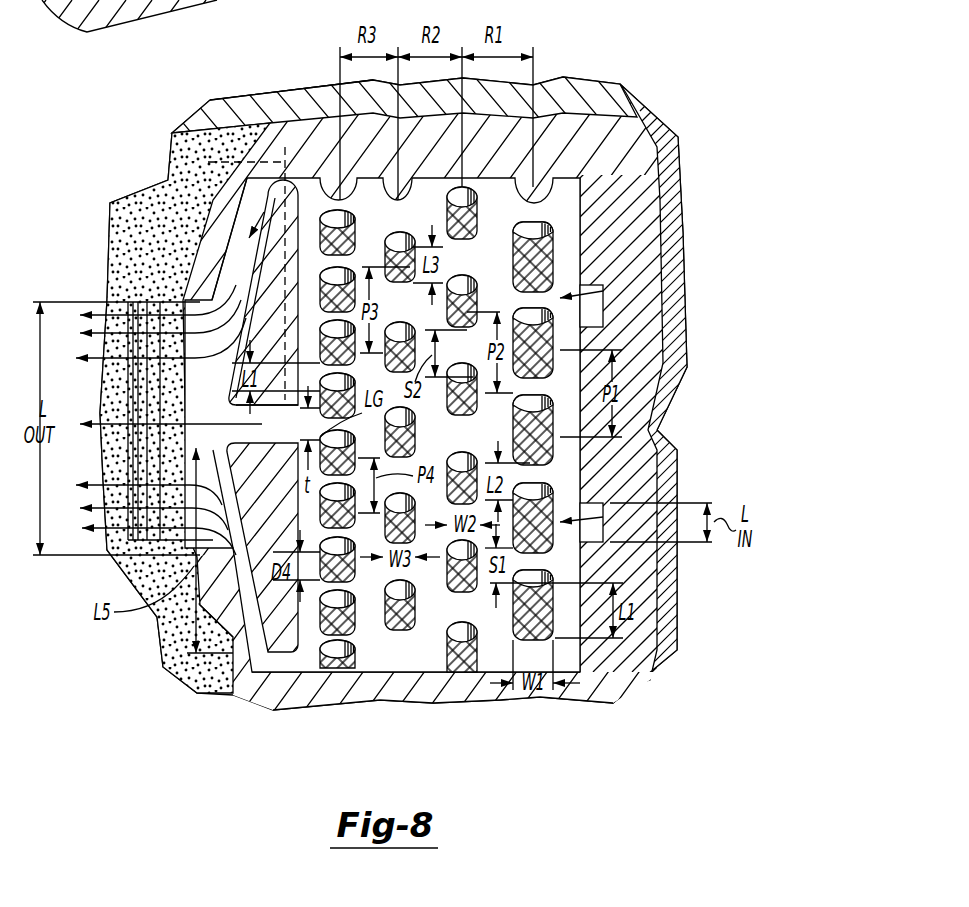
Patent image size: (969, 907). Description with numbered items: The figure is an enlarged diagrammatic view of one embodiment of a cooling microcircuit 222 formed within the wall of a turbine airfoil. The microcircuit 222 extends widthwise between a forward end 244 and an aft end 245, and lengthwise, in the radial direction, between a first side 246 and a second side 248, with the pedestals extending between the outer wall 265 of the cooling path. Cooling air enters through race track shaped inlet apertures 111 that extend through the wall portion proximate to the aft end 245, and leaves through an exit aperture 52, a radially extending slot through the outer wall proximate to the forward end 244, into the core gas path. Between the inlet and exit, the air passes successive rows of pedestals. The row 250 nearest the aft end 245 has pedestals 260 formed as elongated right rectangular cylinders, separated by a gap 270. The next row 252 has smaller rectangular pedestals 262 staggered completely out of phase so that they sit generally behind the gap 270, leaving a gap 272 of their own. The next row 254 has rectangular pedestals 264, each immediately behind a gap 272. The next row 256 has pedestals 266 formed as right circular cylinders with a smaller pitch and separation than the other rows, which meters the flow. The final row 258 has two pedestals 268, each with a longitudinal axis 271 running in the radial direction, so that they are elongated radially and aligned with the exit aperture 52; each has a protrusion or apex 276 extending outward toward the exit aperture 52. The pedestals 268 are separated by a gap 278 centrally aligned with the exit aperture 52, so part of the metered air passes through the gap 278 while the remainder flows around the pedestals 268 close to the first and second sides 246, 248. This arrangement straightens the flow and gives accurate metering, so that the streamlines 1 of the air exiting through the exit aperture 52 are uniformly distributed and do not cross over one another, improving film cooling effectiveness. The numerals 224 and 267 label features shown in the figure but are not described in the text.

The microcircuit 222 is at (606, 64).
The top wall 224 is at (210, 118).
The forward end 244 is at (238, 237).
The aft end 245 is at (582, 222).
The first side 246 is at (307, 173).
The second side 248 is at (260, 682).
The row 250 is at (540, 705).
The row 252 is at (465, 682).
The row 254 is at (401, 655).
The row 256 is at (343, 690).
The row 258 is at (285, 685).
The pedestals 260 is at (520, 533).
The pedestals 262 is at (450, 613).
The pedestals 264 is at (402, 629).
The outer wall 265 is at (238, 100).
The pedestals 266 is at (343, 624).
The insulating body 267 is at (108, 235).
The pedestals 268 is at (280, 328).
The gap 270 is at (565, 474).
The longitudinal axis 271 is at (231, 273).
The gap 272 is at (470, 258).
The apex 276 is at (243, 510).
The gap 278 is at (263, 420).
The exit aperture 52 is at (147, 403).
The inlet aperture 111 is at (593, 317).
The streamlines 1 is at (158, 420).